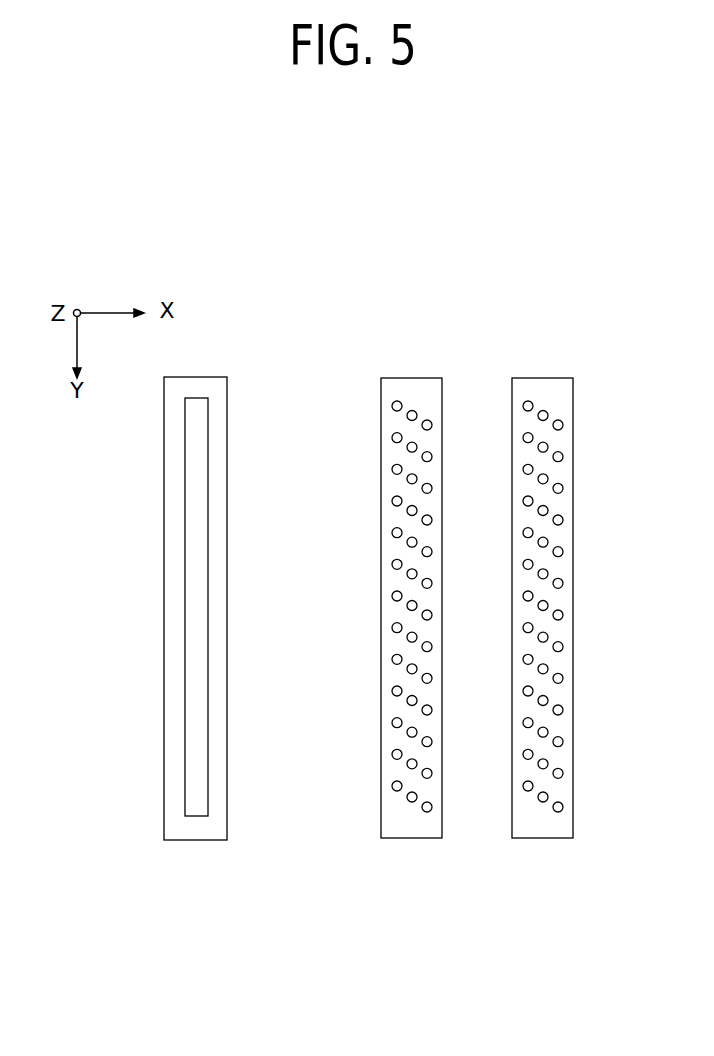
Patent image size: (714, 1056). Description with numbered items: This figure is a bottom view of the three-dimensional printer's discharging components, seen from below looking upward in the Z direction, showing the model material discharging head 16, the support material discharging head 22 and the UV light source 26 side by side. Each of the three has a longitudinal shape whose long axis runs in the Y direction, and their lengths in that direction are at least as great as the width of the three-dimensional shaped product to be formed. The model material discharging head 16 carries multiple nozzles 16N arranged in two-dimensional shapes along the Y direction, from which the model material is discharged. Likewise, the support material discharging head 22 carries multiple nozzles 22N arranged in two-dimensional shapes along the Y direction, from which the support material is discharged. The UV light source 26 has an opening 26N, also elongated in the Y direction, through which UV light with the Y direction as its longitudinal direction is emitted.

The UV light source 26 is at (213, 377).
The opening 26N is at (196, 816).
The support material discharging head 22 is at (414, 378).
The nozzles 22N is at (397, 791).
The model material discharging head 16 is at (546, 378).
The nozzles 16N is at (528, 792).